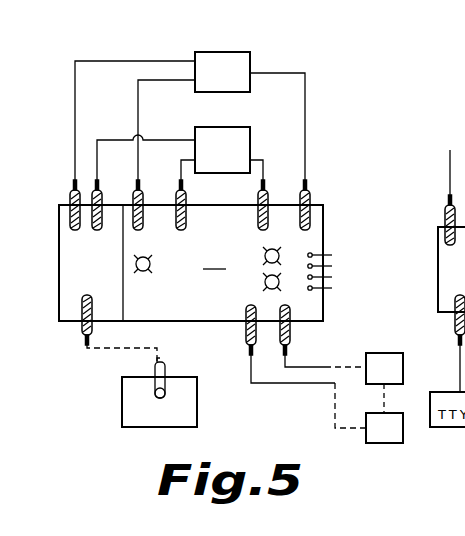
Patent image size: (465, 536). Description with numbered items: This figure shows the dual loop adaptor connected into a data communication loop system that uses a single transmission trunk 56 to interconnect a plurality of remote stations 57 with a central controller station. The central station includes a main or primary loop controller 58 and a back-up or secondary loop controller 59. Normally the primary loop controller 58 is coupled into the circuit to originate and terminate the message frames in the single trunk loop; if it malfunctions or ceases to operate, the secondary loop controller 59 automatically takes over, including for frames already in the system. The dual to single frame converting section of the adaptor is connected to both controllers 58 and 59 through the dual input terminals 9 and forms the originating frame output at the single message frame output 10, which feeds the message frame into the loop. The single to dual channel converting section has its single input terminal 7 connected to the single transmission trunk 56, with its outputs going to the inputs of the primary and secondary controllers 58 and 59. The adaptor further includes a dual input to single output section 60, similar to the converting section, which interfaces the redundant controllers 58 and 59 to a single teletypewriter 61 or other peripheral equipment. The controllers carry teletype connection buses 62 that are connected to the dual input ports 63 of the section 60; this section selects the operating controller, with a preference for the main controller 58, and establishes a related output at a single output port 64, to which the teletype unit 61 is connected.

The teletype connection buses 62 is at (117, 62).
The primary loop controller 58 is at (249, 93).
The secondary loop controller 59 is at (252, 128).
The dual input terminals 9 is at (168, 208).
The dual input ports 63 is at (93, 231).
The dual input to single output section 60 is at (73, 312).
The single output port 64 is at (90, 296).
The teletypewriter 61 is at (197, 413).
The single message frame output 10 is at (244, 311).
The single input terminal 7 is at (291, 306).
The single transmission trunk 56 is at (306, 366).
The remote stations 57 is at (406, 412).